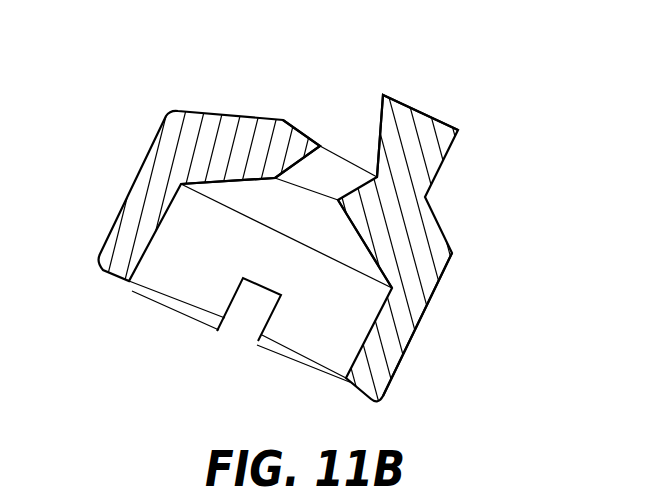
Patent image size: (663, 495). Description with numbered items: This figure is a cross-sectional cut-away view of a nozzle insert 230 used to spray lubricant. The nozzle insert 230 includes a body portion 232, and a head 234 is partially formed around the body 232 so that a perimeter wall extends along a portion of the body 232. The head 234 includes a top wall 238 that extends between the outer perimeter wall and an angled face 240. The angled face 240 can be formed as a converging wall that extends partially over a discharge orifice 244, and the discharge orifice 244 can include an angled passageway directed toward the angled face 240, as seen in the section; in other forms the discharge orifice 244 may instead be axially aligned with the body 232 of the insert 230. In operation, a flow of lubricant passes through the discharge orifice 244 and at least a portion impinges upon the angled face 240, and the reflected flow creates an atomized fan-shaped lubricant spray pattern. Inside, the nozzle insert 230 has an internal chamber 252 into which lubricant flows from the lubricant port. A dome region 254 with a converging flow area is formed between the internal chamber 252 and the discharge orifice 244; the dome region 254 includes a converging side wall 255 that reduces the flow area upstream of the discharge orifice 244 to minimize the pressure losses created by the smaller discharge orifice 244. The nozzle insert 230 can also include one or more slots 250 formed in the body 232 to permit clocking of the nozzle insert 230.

The nozzle insert 230 is at (418, 325).
The body portion 232 is at (131, 197).
The head 234 is at (427, 157).
The top wall 238 is at (420, 108).
The angled face 240 is at (381, 125).
The discharge orifice 244 is at (335, 172).
The slot 250 is at (255, 310).
The internal chamber 252 is at (185, 267).
The dome region 254 is at (237, 190).
The converging side wall 255 is at (195, 181).